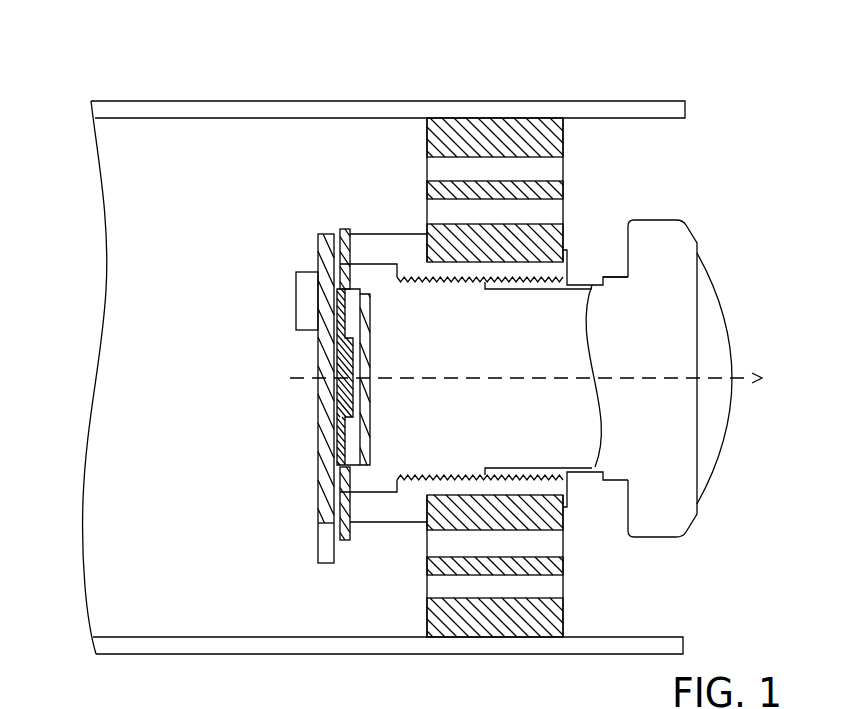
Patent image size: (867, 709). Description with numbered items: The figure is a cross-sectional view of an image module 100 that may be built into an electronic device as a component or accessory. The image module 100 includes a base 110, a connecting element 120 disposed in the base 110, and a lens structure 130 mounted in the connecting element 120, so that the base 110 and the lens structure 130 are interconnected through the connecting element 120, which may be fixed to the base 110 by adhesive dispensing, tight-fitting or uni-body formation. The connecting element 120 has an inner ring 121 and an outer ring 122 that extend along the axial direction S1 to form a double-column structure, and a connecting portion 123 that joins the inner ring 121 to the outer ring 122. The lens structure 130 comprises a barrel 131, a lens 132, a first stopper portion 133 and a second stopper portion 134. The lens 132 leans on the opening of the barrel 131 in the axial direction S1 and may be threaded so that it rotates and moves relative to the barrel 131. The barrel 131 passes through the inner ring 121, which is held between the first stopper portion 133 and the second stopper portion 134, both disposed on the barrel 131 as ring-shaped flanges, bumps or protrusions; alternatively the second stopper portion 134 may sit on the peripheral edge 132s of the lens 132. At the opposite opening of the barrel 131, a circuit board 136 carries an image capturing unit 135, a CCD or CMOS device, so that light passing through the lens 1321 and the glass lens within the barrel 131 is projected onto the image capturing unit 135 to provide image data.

The image module 100 is at (124, 62).
The base 110 is at (360, 112).
The connecting element 120 is at (540, 60).
The inner ring 121 is at (470, 243).
The outer ring 122 is at (535, 135).
The connecting portion 123 is at (502, 185).
The lens structure 130 is at (713, 242).
The barrel 131 is at (367, 233).
The lens 132 is at (667, 237).
The peripheral edge 132s is at (613, 260).
The lens 1321 is at (707, 438).
The first stopper portion 133 is at (415, 250).
The second stopper portion 134 is at (572, 260).
The image capturing unit 135 is at (368, 439).
The circuit board 136 is at (325, 551).
The axial direction S1 is at (541, 379).